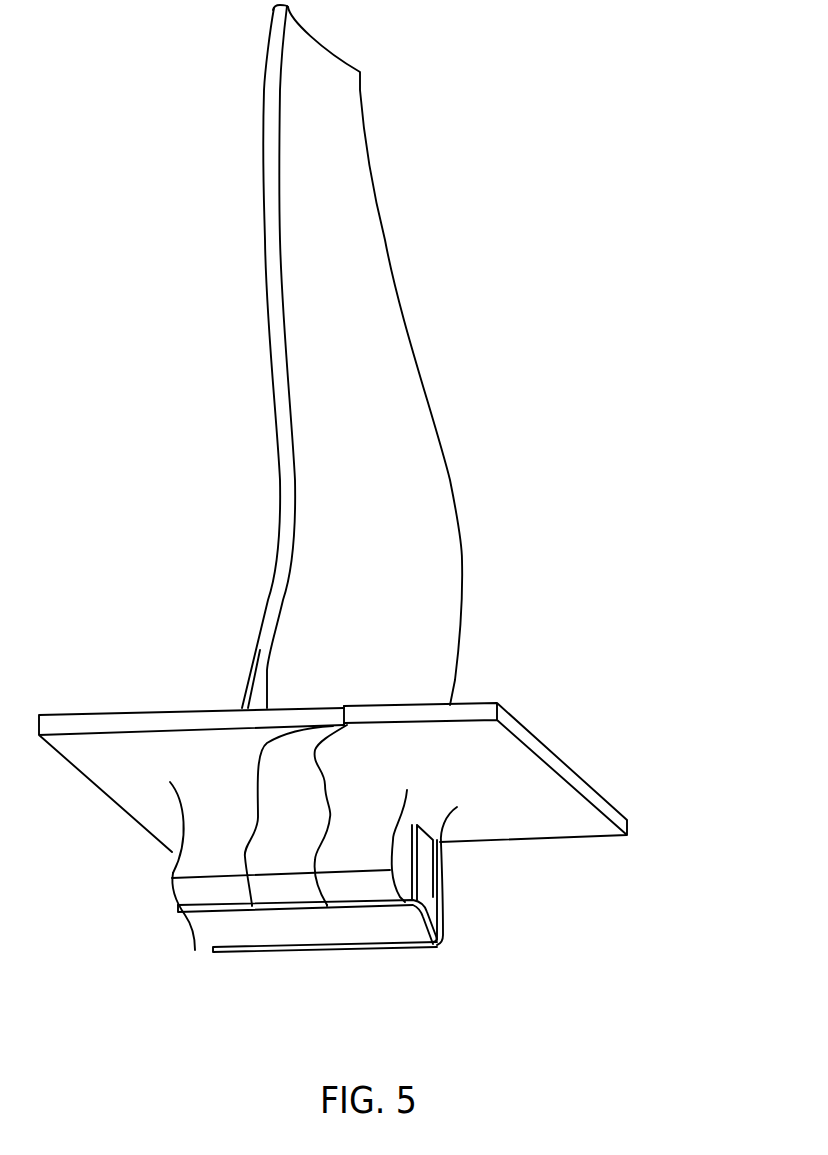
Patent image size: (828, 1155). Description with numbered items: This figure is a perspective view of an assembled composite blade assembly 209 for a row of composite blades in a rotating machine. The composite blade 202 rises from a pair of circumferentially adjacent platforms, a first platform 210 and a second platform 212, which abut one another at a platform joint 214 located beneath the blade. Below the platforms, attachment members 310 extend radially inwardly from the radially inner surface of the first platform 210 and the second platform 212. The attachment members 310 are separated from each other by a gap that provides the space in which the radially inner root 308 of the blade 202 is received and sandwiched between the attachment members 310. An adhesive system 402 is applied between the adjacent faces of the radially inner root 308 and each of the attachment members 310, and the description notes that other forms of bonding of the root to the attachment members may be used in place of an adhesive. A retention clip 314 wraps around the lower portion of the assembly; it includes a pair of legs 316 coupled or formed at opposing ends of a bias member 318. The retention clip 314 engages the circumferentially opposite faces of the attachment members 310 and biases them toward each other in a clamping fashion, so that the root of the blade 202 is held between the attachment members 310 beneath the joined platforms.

The composite blade assembly 209 is at (620, 92).
The composite blade 202 is at (410, 225).
The first platform 210 is at (108, 722).
The second platform 212 is at (475, 713).
The platform joint 214 is at (347, 713).
The radially inner root 308 is at (312, 841).
The adhesive system 402 is at (240, 829).
The legs 316 is at (168, 864).
The retention clip 314 is at (423, 895).
The bias member 318 is at (395, 928).
The attachment members 310 is at (220, 855).